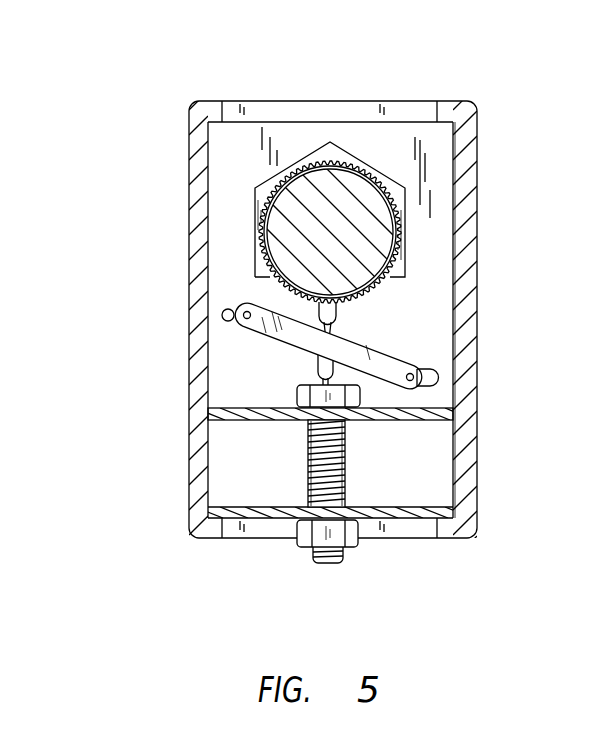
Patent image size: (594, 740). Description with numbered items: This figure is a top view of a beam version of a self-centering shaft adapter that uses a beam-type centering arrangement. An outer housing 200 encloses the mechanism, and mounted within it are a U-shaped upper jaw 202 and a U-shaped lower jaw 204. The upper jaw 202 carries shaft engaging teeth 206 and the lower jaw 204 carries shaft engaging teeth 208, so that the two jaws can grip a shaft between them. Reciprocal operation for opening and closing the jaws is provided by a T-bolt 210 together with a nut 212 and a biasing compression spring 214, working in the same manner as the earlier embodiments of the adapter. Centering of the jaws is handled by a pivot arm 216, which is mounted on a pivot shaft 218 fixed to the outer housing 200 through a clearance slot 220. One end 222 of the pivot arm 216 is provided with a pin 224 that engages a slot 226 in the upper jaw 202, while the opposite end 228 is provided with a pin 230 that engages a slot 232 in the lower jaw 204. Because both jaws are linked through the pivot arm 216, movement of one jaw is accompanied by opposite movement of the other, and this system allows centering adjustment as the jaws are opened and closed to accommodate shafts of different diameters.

The outer housing 200 is at (263, 103).
The U-shaped upper jaw 202 is at (383, 147).
The U-shaped lower jaw 204 is at (430, 296).
The shaft engaging teeth 206 is at (287, 178).
The shaft engaging teeth 208 is at (260, 262).
The T-bolt 210 is at (300, 396).
The nut 212 is at (355, 547).
The biasing compression spring 214 is at (345, 445).
The pivot arm 216 is at (386, 352).
The pivot shaft 218 is at (331, 341).
The clearance slot 220 is at (336, 368).
The end of pivot arm 222 is at (267, 328).
The pin 224 is at (235, 322).
The slot 226 is at (242, 314).
The end of pivot arm 228 is at (398, 362).
The pin 230 is at (436, 382).
The slot 232 is at (430, 375).